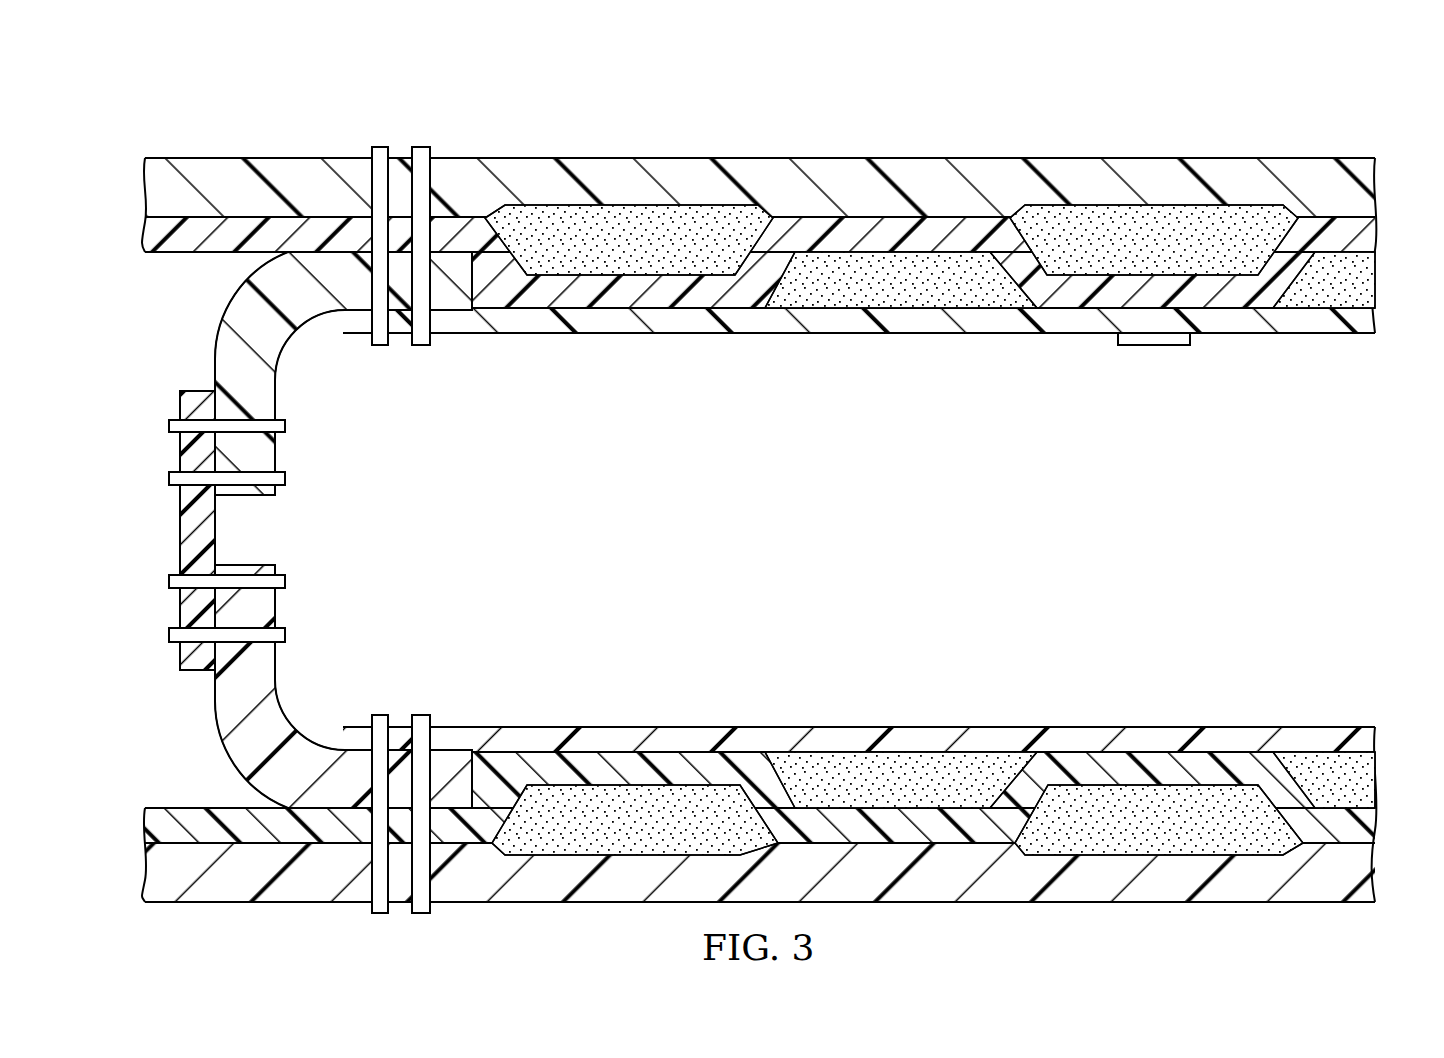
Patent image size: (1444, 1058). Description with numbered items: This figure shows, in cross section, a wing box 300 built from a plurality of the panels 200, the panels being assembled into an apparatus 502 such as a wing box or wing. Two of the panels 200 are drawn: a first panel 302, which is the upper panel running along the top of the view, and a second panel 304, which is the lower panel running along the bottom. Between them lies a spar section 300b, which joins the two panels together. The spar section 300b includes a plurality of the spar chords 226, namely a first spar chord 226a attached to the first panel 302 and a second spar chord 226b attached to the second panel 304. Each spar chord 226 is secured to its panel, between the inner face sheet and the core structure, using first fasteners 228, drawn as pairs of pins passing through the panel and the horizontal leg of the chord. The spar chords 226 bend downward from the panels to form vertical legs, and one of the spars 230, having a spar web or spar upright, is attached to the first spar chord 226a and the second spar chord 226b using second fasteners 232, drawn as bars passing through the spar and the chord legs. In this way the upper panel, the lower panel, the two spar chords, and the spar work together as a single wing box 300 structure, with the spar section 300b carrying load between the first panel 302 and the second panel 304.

The wing box 300 is at (289, 435).
The spar section 300b is at (343, 686).
The panel 200 is at (1133, 133).
The apparatus 502 is at (1377, 98).
The first fasteners 228 is at (378, 146).
The spar chords 226 is at (306, 530).
The first spar chord 226a is at (276, 390).
The second spar chord 226b is at (275, 670).
The spar 230 is at (179, 532).
The second fasteners 232 is at (286, 478).
The first panel 302 is at (1308, 372).
The second panel 304 is at (1308, 690).